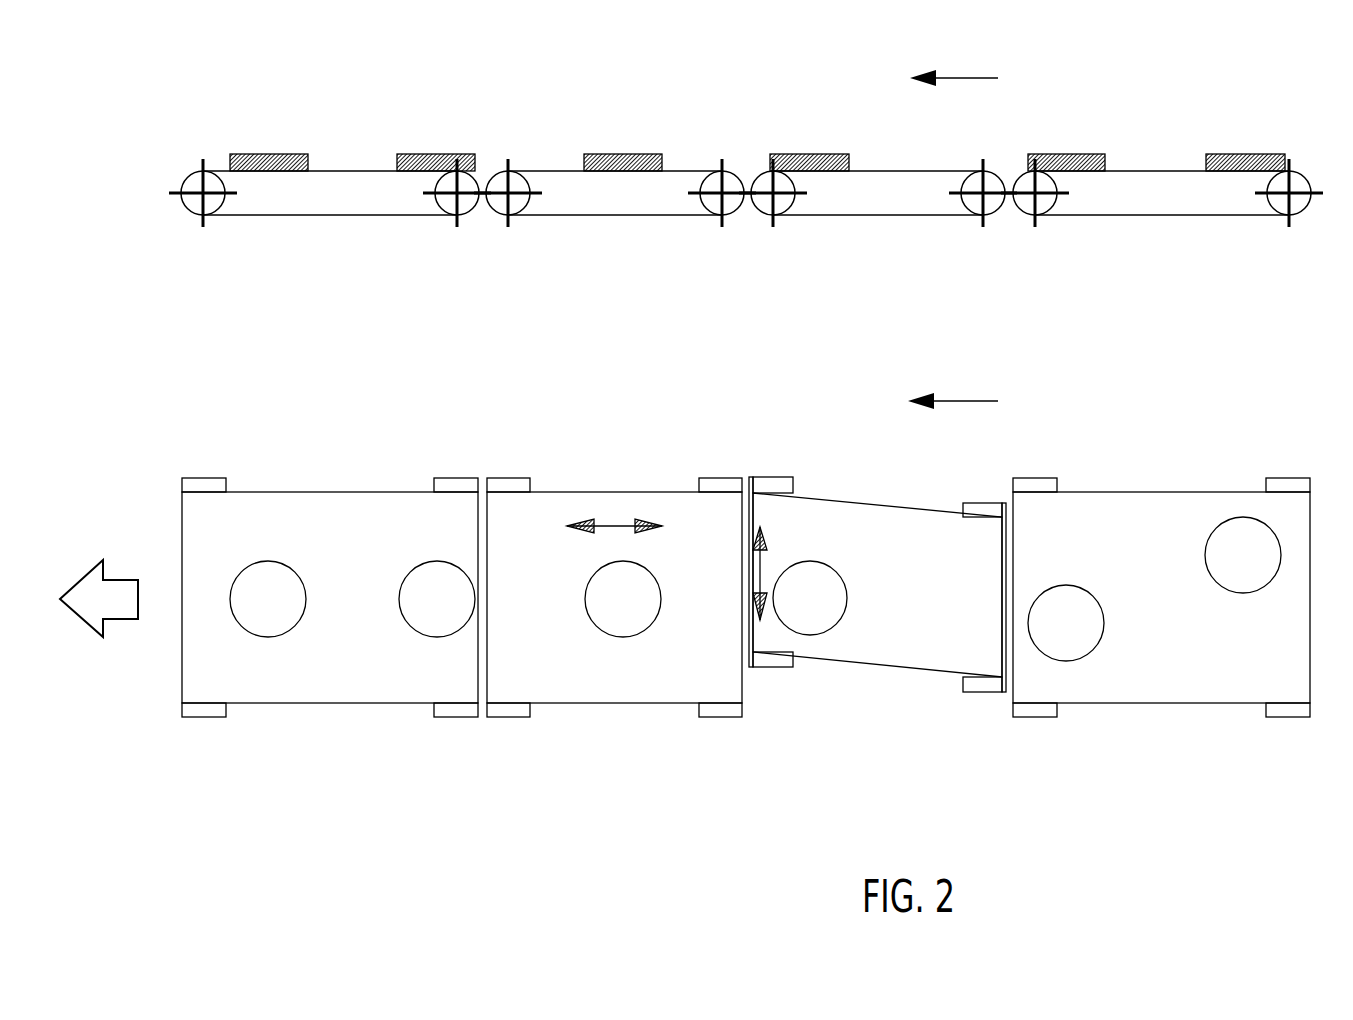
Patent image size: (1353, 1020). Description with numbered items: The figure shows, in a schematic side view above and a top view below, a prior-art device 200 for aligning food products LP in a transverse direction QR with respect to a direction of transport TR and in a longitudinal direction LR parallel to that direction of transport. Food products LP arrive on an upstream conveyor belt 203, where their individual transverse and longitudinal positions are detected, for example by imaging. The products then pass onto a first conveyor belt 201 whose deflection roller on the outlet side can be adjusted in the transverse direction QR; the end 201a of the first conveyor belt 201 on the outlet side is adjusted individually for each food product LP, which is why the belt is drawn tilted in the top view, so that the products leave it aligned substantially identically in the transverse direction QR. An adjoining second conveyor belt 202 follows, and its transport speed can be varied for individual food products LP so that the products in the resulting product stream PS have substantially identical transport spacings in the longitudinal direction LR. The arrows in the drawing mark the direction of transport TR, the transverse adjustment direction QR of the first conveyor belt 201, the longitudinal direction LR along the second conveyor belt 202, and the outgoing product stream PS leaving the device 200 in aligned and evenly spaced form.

The device 200 is at (1236, 287).
The first conveyor belt 201 is at (877, 171).
The end of first conveyor belt on the outlet side 201a is at (773, 695).
The second conveyor belt 202 is at (531, 171).
The upstream conveyor belt 203 is at (1148, 171).
The food products LP is at (279, 153).
The longitudinal direction LR is at (613, 522).
The transverse direction QR is at (760, 562).
The direction of transport TR is at (966, 78).
The product stream PS is at (121, 574).